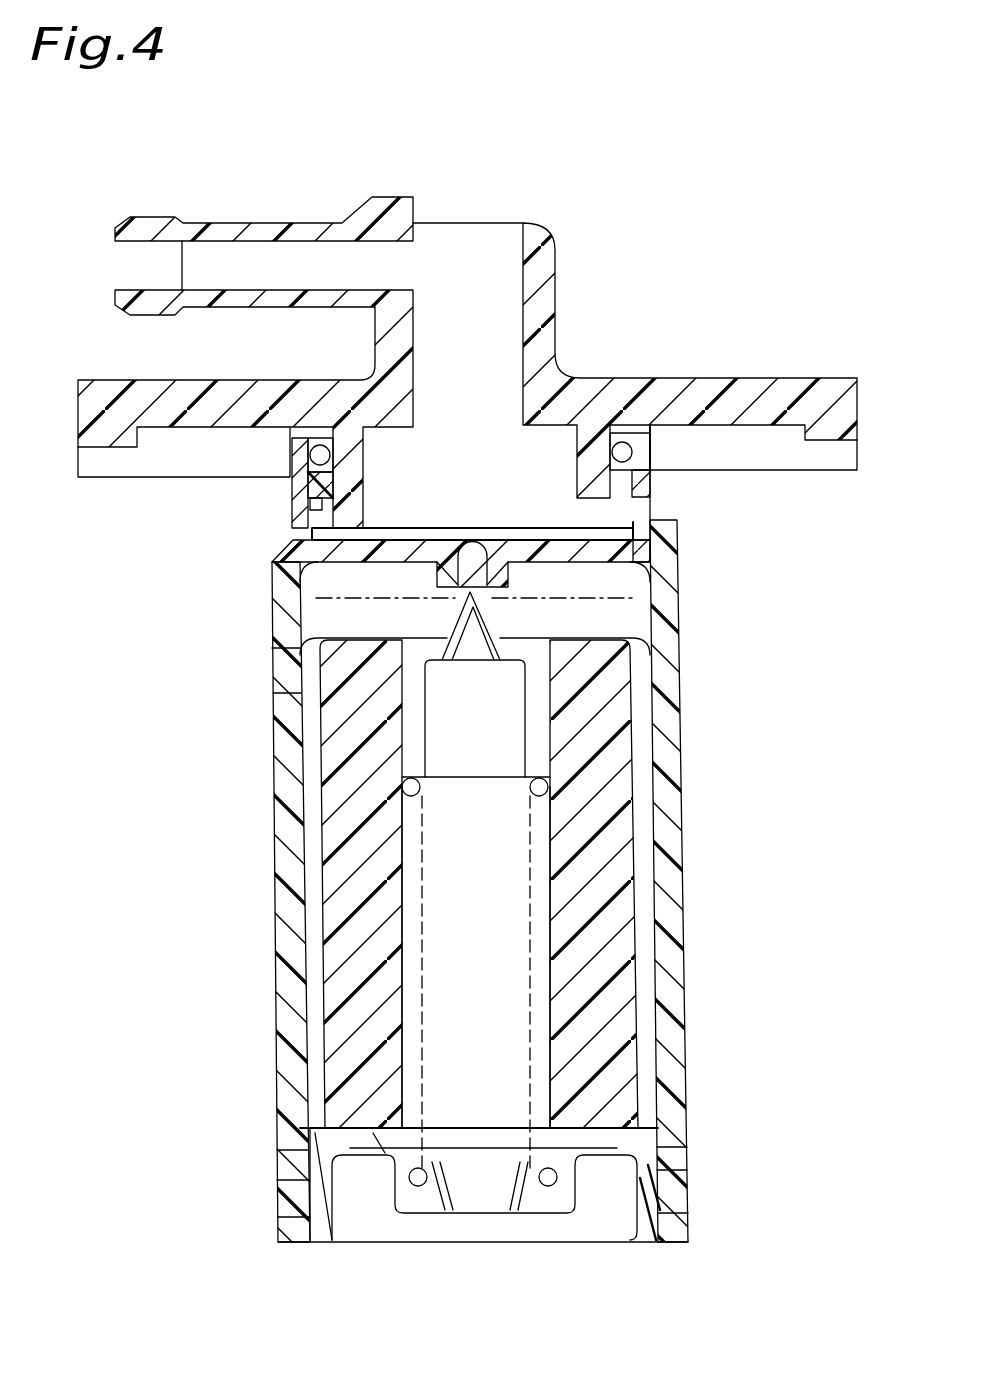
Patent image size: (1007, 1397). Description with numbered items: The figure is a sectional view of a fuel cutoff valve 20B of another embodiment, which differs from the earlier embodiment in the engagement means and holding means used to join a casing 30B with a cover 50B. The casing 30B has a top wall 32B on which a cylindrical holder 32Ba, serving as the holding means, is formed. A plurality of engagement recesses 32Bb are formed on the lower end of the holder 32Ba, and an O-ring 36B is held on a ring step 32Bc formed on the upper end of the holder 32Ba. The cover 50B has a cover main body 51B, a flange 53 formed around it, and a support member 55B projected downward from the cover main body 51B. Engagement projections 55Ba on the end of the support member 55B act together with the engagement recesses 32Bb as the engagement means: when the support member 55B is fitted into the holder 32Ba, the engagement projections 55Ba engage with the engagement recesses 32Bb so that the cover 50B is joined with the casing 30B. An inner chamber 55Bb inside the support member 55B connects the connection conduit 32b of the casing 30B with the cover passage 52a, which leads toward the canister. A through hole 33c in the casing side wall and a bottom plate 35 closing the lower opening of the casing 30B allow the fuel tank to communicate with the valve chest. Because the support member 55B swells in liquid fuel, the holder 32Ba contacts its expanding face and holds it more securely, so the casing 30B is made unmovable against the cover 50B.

The fuel cutoff valve 20B is at (740, 158).
The cover 50B is at (515, 232).
The cover main body 51B is at (546, 270).
The cover passage 52a is at (278, 262).
The flange 53 is at (810, 374).
The support member 55B is at (590, 437).
The engagement projections 55Ba is at (663, 530).
The inner chamber 55Bb is at (542, 460).
The O-ring 36B is at (625, 446).
The casing 30B is at (265, 627).
The top wall 32B is at (287, 552).
The holder 32Ba is at (640, 482).
The engagement recesses 32Bb is at (655, 505).
The ring step 32Bc is at (645, 452).
The connection conduit 32b is at (473, 547).
The through hole 33c is at (283, 689).
The bottom plate 35 is at (540, 1213).